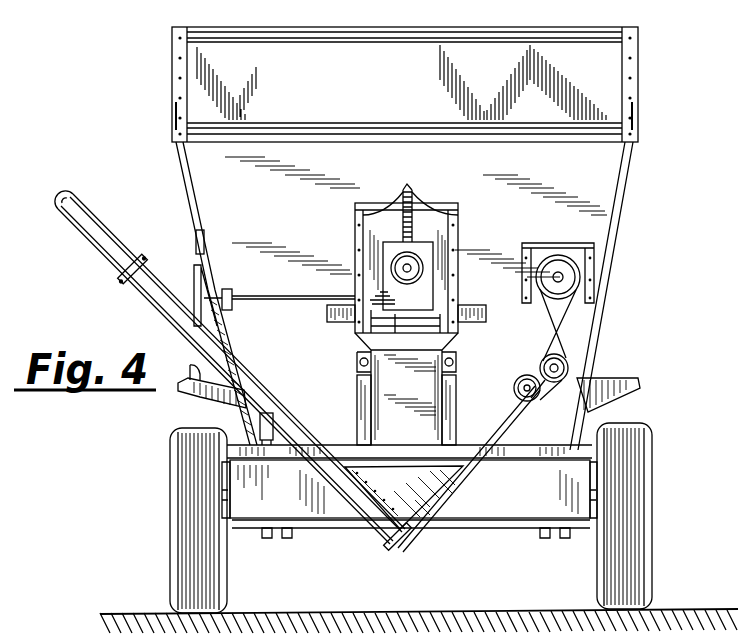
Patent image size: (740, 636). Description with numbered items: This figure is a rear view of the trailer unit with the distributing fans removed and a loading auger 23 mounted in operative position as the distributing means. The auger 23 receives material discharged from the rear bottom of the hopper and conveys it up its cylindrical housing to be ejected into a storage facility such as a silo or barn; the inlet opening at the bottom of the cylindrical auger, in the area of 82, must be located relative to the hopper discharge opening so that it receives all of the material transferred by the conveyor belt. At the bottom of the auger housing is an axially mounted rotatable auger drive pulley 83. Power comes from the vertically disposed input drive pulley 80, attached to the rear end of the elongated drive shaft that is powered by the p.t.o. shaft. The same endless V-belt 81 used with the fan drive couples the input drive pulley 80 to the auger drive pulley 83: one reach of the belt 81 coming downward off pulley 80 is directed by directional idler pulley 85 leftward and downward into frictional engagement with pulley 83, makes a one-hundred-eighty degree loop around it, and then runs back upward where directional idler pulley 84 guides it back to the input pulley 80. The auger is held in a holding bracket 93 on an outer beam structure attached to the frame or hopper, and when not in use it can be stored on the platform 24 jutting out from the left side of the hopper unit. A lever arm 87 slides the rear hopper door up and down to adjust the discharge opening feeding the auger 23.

The loading auger 23 is at (132, 290).
The platform 24 is at (197, 395).
The input drive pulley 80 is at (573, 265).
The V-belt 81 is at (575, 324).
The inlet opening area 82 is at (410, 500).
The auger drive pulley 83 is at (392, 552).
The directional idler pulley 84 is at (563, 362).
The directional idler pulley 85 is at (520, 378).
The lever arm 87 is at (196, 242).
The holding bracket 93 is at (259, 437).